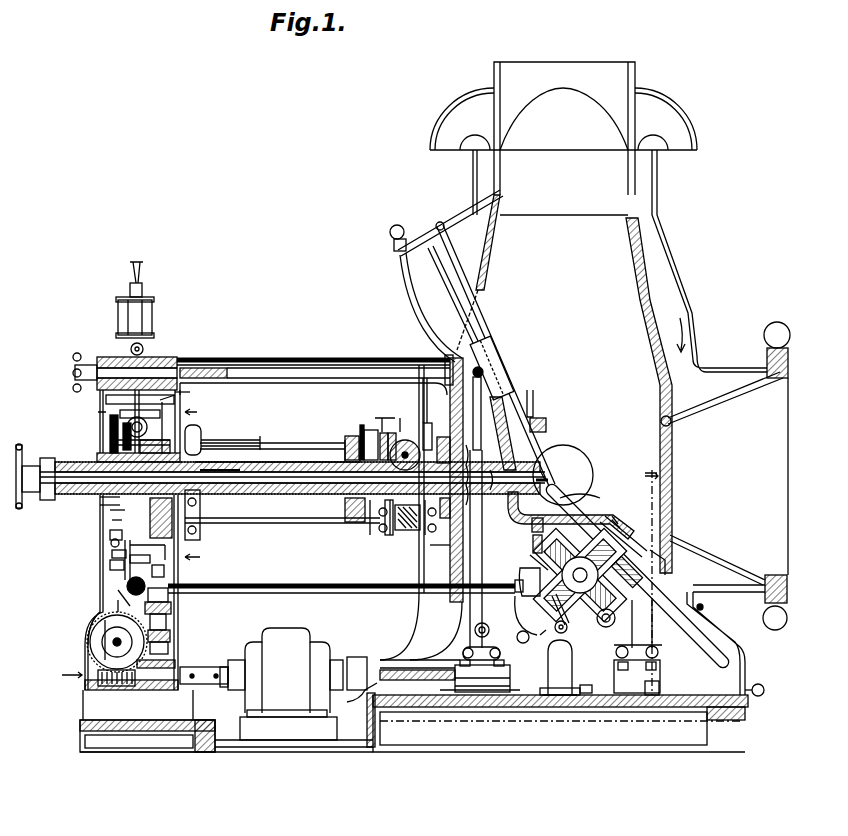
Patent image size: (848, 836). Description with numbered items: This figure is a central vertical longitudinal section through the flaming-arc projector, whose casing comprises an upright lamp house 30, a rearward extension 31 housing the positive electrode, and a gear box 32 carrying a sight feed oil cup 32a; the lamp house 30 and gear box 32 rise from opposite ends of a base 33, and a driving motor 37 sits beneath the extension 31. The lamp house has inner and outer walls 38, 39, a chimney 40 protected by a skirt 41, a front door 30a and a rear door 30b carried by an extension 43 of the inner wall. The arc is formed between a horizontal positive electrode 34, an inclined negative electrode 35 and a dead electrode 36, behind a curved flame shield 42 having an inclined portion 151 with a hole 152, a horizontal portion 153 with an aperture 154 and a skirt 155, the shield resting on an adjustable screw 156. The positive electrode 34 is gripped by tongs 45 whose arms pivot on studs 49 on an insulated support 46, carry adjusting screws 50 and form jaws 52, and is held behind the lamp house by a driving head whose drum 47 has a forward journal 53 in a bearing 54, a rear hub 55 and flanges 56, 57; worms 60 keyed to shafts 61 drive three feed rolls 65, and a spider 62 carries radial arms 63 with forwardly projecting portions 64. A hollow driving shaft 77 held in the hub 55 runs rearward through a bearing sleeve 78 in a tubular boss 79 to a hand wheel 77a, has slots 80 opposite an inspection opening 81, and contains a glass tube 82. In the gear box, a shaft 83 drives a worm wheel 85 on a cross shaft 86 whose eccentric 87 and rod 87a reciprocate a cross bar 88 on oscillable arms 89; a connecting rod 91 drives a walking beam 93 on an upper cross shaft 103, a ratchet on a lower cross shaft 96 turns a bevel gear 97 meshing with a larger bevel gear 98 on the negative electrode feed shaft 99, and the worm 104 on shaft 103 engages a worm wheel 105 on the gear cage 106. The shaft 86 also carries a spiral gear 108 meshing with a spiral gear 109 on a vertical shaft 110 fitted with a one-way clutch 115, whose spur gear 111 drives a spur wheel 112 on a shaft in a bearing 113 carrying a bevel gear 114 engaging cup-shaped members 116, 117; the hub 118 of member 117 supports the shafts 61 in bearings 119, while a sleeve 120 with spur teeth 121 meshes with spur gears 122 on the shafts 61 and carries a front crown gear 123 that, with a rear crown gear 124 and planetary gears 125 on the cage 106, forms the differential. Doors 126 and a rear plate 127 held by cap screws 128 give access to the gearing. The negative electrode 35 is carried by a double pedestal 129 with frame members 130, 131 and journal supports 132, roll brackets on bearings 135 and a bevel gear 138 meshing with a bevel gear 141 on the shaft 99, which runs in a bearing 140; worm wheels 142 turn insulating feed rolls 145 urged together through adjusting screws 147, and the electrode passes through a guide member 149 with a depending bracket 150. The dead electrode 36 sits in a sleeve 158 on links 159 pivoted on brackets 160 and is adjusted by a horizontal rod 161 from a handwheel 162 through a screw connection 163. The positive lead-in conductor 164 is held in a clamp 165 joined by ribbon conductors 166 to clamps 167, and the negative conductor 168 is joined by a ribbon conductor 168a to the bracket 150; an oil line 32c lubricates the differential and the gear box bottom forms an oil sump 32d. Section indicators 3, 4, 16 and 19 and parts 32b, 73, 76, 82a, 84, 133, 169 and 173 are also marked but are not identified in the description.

The section line 3 is at (582, 579).
The section line 4 is at (652, 577).
The section arrow 16 is at (200, 484).
The section arrow 19 is at (138, 573).
The casing 30 is at (655, 283).
The casing lower wall 30a is at (746, 664).
The lever 30b is at (429, 232).
The tube 31 is at (246, 357).
The gear housing 32 is at (132, 523).
The oil cup 32a is at (153, 320).
The rod 32b is at (319, 381).
The shaft 32c is at (141, 427).
The bracket 32d is at (178, 662).
The base 33 is at (376, 737).
The shaft end 34 is at (550, 479).
The rod 35 is at (566, 494).
The disc 36 is at (540, 462).
The motor 37 is at (298, 705).
The inner wall 38 is at (640, 232).
The outer wall 39 is at (672, 250).
The outlet cylinder 40 is at (553, 63).
The hood 41 is at (697, 141).
The bracket 42 is at (534, 400).
The curved wall 43 is at (422, 298).
The column 45 is at (483, 575).
The bearing 46 is at (450, 532).
The worm 47 is at (378, 525).
The block 49 is at (530, 528).
The ring 50 is at (490, 632).
The spring 52 is at (489, 468).
The spring 53 is at (478, 450).
The bearing 54 is at (443, 436).
The plate 55 is at (345, 460).
The bearing 56 is at (428, 422).
The pin 57 is at (382, 418).
The collar 60 is at (403, 418).
The rod 61 is at (252, 527).
The plate 62 is at (361, 432).
The disc 63 is at (381, 432).
The disc 64 is at (393, 432).
The gear 65 is at (409, 440).
The bearing 73 is at (366, 445).
The bearing 76 is at (348, 442).
The main shaft 77 is at (291, 497).
The flange 77a is at (21, 445).
The sleeve 78 is at (100, 496).
The sleeve 79 is at (100, 505).
The rod 80 is at (277, 461).
The rod 81 is at (265, 442).
The collar 82 is at (238, 468).
The bearing 82a is at (351, 522).
The coupling 83 is at (195, 685).
The worm 84 is at (124, 687).
The housing 85 is at (88, 652).
The worm gear 86 is at (90, 641).
The hub 87 is at (104, 634).
The shaft 87a is at (104, 620).
The cam 88 is at (126, 588).
The lever 89 is at (126, 607).
The rod 91 is at (122, 576).
The plate 93 is at (140, 397).
The block 96 is at (175, 560).
The block 97 is at (172, 571).
The block 98 is at (170, 598).
The shaft 99 is at (252, 589).
The gear 103 is at (139, 421).
The plate 104 is at (142, 404).
The post 105 is at (108, 424).
The post 106 is at (118, 438).
The block 108 is at (170, 648).
The spring 109 is at (172, 636).
The spring 110 is at (172, 610).
The arm 111 is at (176, 548).
The block 112 is at (110, 565).
The block 113 is at (112, 554).
The block 114 is at (161, 525).
The block 115 is at (168, 622).
The block 116 is at (110, 534).
The pin 117 is at (200, 535).
The bracket 118 is at (201, 500).
The pin 119 is at (198, 510).
The rod 120 is at (236, 443).
The knob 121 is at (204, 433).
The rod 122 is at (176, 415).
The plate 123 is at (178, 402).
The bearing 124 is at (128, 450).
The lever 125 is at (110, 513).
The link 126 is at (118, 600).
The lever 127 is at (112, 523).
The pin 128 is at (111, 544).
The base block 129 is at (567, 669).
The bracket 130 is at (572, 642).
The link 131 is at (518, 612).
The cylinder 132 is at (532, 561).
The cylinder 133 is at (564, 545).
The rod 135 is at (555, 604).
The link 138 is at (530, 570).
The fork 140 is at (520, 594).
The pivot 141 is at (520, 632).
The block 142 is at (650, 582).
The bracket 145 is at (672, 535).
The pin 147 is at (558, 634).
The pin 149 is at (616, 510).
The bracket 150 is at (622, 640).
The block 151 is at (546, 418).
The pin 152 is at (545, 469).
The arm 153 is at (594, 508).
The spring 154 is at (590, 495).
The rod 155 is at (620, 522).
The pin 156 is at (532, 543).
The rod 158 is at (497, 346).
The rod 159 is at (485, 395).
The bearing 160 is at (452, 554).
The tube 161 is at (264, 367).
The knob 162 is at (89, 364).
The sleeve 163 is at (193, 366).
The plate 164 is at (450, 690).
The plate 165 is at (470, 692).
The bracket 166 is at (486, 662).
The block 167 is at (500, 668).
The bolt 168 is at (587, 695).
The block 168a is at (650, 665).
The strip 169 is at (372, 680).
The pipe 173 is at (449, 648).